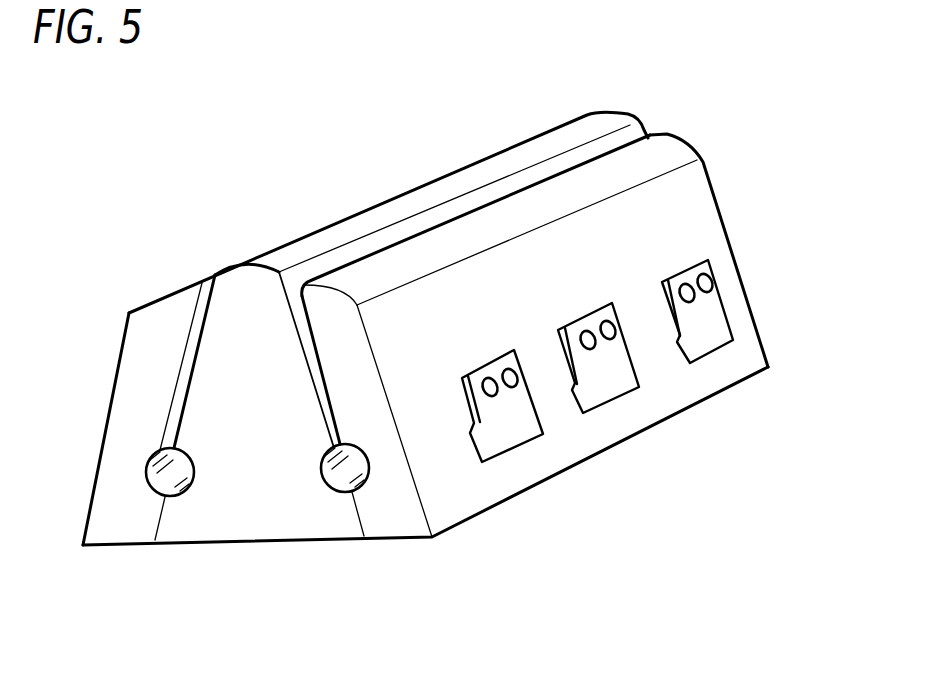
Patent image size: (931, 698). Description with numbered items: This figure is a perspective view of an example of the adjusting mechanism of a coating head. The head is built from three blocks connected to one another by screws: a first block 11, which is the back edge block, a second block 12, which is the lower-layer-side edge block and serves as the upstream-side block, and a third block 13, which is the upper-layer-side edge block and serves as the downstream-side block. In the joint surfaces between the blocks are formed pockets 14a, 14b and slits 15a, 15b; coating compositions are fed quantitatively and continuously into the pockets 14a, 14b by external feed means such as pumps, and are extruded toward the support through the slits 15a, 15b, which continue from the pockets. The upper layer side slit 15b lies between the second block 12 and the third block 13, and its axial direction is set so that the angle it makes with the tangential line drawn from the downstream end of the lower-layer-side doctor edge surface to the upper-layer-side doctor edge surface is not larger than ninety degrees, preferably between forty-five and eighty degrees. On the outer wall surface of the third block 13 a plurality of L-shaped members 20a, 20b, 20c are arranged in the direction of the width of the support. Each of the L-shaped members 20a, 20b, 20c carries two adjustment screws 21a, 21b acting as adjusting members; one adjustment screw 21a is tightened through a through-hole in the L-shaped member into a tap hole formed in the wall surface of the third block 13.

The first block 11 is at (135, 382).
The second block 12 is at (237, 303).
The third block 13 is at (696, 208).
The pocket 14a is at (177, 479).
The pocket 14b is at (333, 492).
The slit 15a is at (193, 332).
The upper layer side slit 15b is at (310, 318).
The L-shaped member 20a is at (518, 427).
The L-shaped member 20b is at (612, 386).
The L-shaped member 20c is at (717, 338).
The adjustment screw 21a is at (490, 374).
The adjustment screw 21b is at (520, 368).